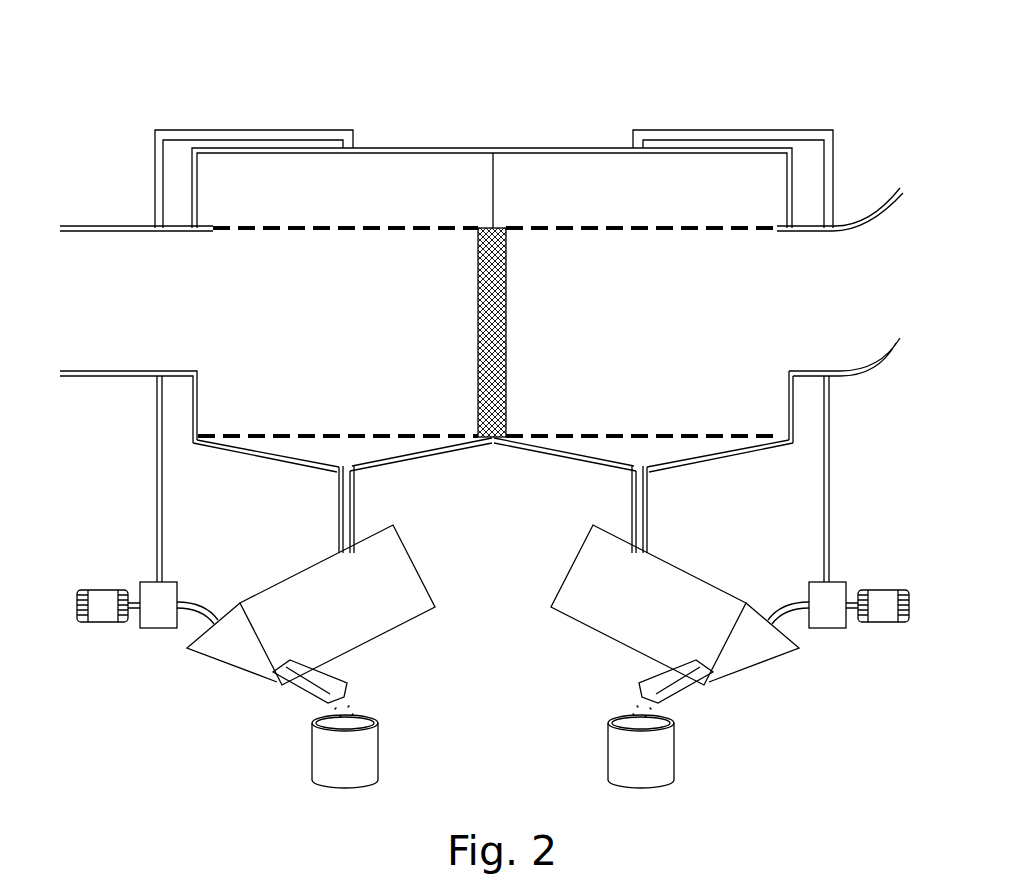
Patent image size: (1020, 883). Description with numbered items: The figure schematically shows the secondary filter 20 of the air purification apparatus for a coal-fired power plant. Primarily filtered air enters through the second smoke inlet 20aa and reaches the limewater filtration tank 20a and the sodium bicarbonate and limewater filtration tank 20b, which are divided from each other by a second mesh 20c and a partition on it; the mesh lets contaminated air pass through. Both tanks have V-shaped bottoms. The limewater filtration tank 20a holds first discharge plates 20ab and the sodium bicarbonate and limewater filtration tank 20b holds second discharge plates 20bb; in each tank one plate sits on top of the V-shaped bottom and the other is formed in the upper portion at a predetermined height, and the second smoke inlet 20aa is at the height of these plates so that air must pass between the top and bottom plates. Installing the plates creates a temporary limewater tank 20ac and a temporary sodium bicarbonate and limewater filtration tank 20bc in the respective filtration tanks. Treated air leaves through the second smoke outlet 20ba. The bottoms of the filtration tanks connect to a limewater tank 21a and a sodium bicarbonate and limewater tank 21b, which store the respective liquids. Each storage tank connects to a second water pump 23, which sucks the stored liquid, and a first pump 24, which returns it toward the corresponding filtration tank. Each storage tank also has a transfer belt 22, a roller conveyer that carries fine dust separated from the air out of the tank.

The secondary filter 20 is at (603, 110).
The limewater filtration tank 20a is at (393, 150).
The second smoke inlet 20aa is at (133, 288).
The first discharge plates 20ab is at (290, 236).
The temporary limewater tank 20ac is at (270, 180).
The sodium bicarbonate and limewater filtration tank 20b is at (558, 150).
The second smoke outlet 20ba is at (864, 278).
The second discharge plates 20bb is at (638, 236).
The temporary sodium bicarbonate and limewater filtration tank 20bc is at (700, 180).
The second mesh 20c is at (507, 350).
The limewater tank 21a is at (397, 570).
The sodium bicarbonate and limewater tank 21b is at (590, 565).
The transfer belt 22 is at (330, 677).
The second water pump 23 is at (156, 628).
The first pump 24 is at (100, 622).